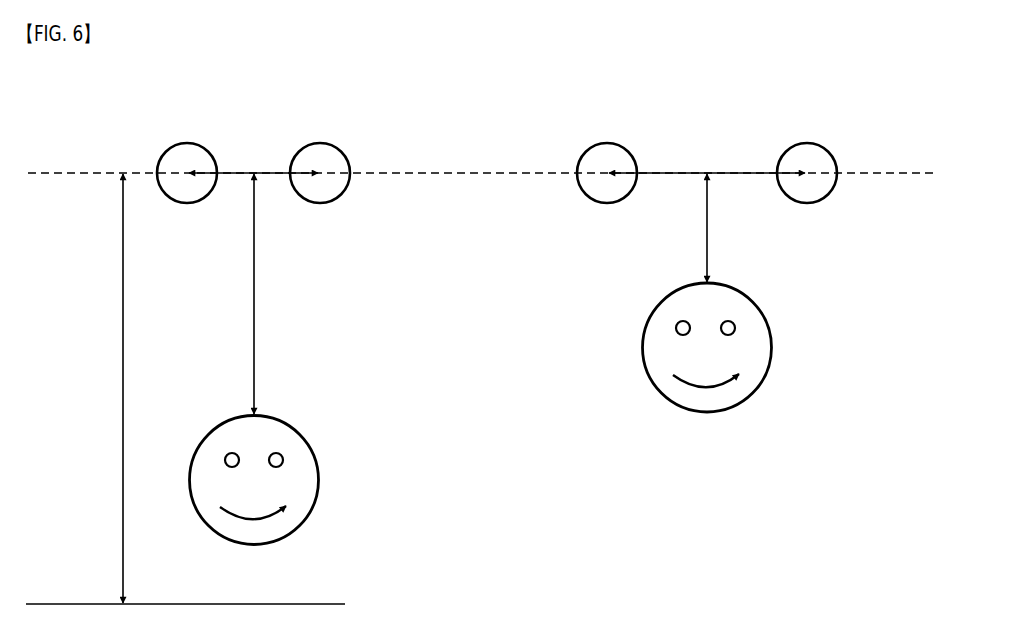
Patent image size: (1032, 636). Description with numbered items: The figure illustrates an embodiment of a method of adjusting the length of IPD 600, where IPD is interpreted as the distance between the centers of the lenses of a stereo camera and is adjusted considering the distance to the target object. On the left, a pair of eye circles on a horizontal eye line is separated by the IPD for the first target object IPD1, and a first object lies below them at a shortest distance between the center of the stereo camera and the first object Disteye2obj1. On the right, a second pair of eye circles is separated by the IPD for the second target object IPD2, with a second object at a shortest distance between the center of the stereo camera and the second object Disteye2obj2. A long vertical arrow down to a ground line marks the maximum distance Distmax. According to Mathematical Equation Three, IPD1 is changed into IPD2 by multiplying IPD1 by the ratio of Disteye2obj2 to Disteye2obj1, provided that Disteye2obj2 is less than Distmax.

The method of adjusting the length of IPD 600 is at (489, 91).
The IPD for the first target object IPD1 is at (253, 170).
The IPD for the second target object IPD2 is at (707, 170).
The maximum distance Distmax is at (77, 388).
The shortest distance between the center of the stereo camera and the first object Disteye2obj1 is at (288, 359).
The shortest distance between the center of the stereo camera and the second object Disteye2obj2 is at (741, 293).